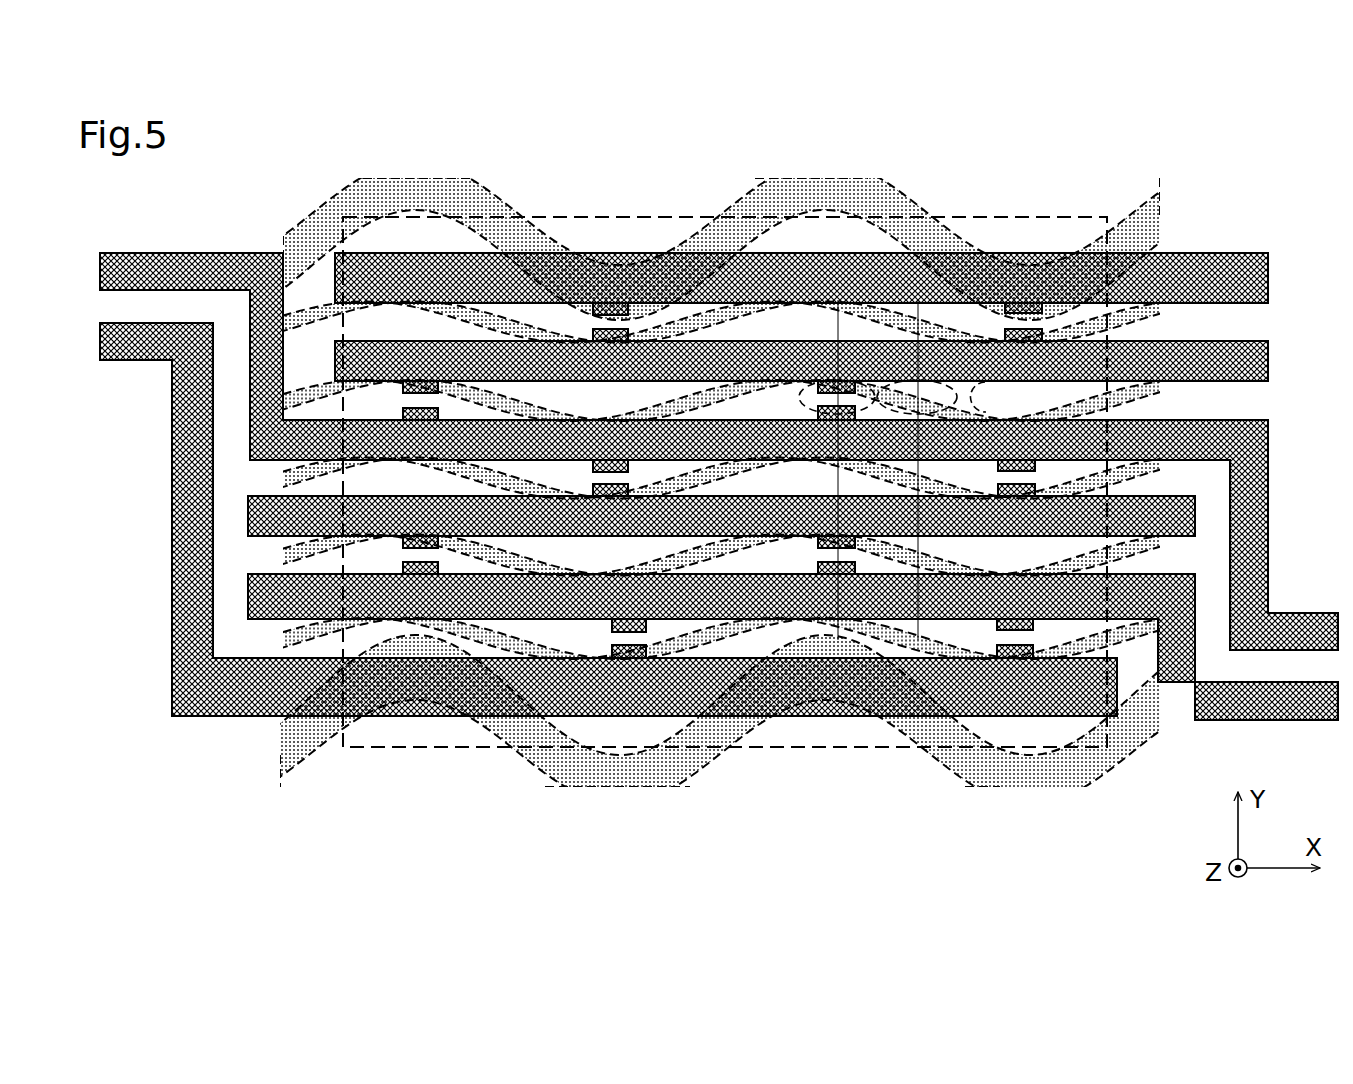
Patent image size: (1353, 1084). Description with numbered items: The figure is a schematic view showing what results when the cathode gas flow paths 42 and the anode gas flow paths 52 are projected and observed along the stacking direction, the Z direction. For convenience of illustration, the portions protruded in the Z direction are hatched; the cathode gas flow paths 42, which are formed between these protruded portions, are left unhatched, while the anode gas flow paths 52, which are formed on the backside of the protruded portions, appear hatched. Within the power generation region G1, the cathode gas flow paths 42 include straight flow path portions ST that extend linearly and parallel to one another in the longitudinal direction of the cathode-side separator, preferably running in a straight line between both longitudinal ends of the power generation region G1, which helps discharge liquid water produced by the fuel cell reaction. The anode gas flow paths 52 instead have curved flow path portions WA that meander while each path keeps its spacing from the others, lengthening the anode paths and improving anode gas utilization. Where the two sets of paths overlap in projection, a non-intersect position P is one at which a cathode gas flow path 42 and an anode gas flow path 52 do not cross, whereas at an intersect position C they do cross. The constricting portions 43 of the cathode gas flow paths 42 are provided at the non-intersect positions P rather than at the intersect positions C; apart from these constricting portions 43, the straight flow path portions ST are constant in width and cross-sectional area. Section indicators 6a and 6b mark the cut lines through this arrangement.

The cathode gas flow path 42 is at (562, 322).
The constricting portion 43 is at (600, 300).
The anode gas flow path 52 is at (1163, 181).
The section line 6a is at (810, 320).
The section line 6b is at (895, 320).
The straight flow path portion ST is at (693, 252).
The non-intersect position P is at (800, 397).
The curved flow path portion WA is at (880, 300).
The intersect position C is at (962, 398).
The power generation region G1 is at (814, 748).